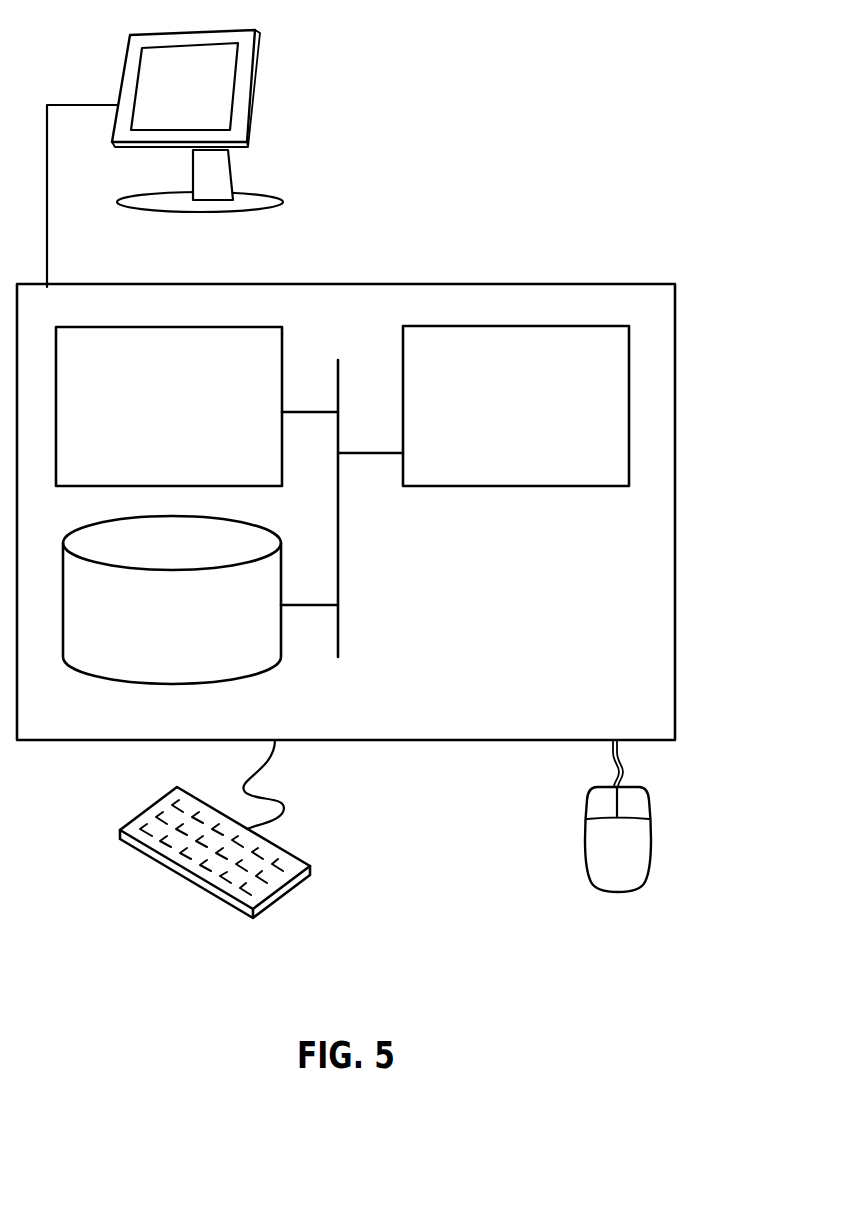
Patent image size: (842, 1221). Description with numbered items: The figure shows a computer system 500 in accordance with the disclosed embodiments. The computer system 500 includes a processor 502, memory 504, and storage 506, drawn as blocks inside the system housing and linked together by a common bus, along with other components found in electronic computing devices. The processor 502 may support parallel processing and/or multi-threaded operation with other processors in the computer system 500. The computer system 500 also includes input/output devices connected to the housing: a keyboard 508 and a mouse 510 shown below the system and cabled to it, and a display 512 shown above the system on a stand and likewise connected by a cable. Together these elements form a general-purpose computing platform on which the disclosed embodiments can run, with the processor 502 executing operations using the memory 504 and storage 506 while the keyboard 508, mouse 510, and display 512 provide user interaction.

The computer system 500 is at (392, 262).
The processor 502 is at (496, 418).
The memory 504 is at (148, 419).
The storage 506 is at (154, 631).
The keyboard 508 is at (138, 852).
The mouse 510 is at (596, 862).
The display 512 is at (165, 158).